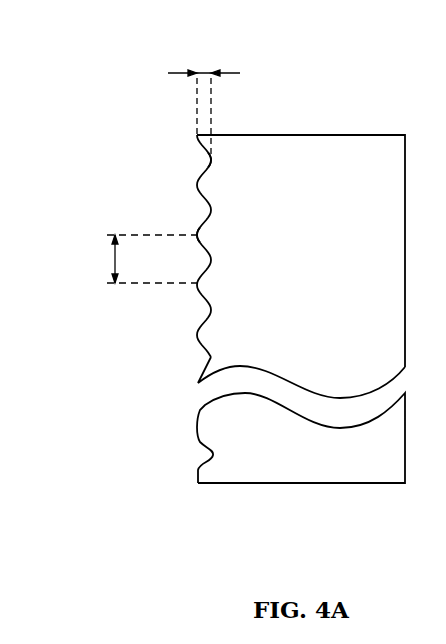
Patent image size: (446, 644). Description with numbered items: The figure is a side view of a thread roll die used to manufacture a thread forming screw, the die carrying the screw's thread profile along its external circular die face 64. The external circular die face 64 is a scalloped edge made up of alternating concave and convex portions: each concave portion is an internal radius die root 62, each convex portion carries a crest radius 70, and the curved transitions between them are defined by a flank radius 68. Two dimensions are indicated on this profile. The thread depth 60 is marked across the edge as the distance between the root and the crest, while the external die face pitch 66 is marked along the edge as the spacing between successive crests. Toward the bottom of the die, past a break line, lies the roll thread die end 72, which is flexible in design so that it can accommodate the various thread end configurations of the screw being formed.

The thread depth 60 is at (205, 72).
The internal radius die root 62 is at (214, 162).
The external circular die face 64 is at (195, 183).
The external die face pitch 66 is at (110, 262).
The flank radius 68 is at (209, 224).
The crest radius 70 is at (208, 360).
The roll thread die end 72 is at (186, 453).